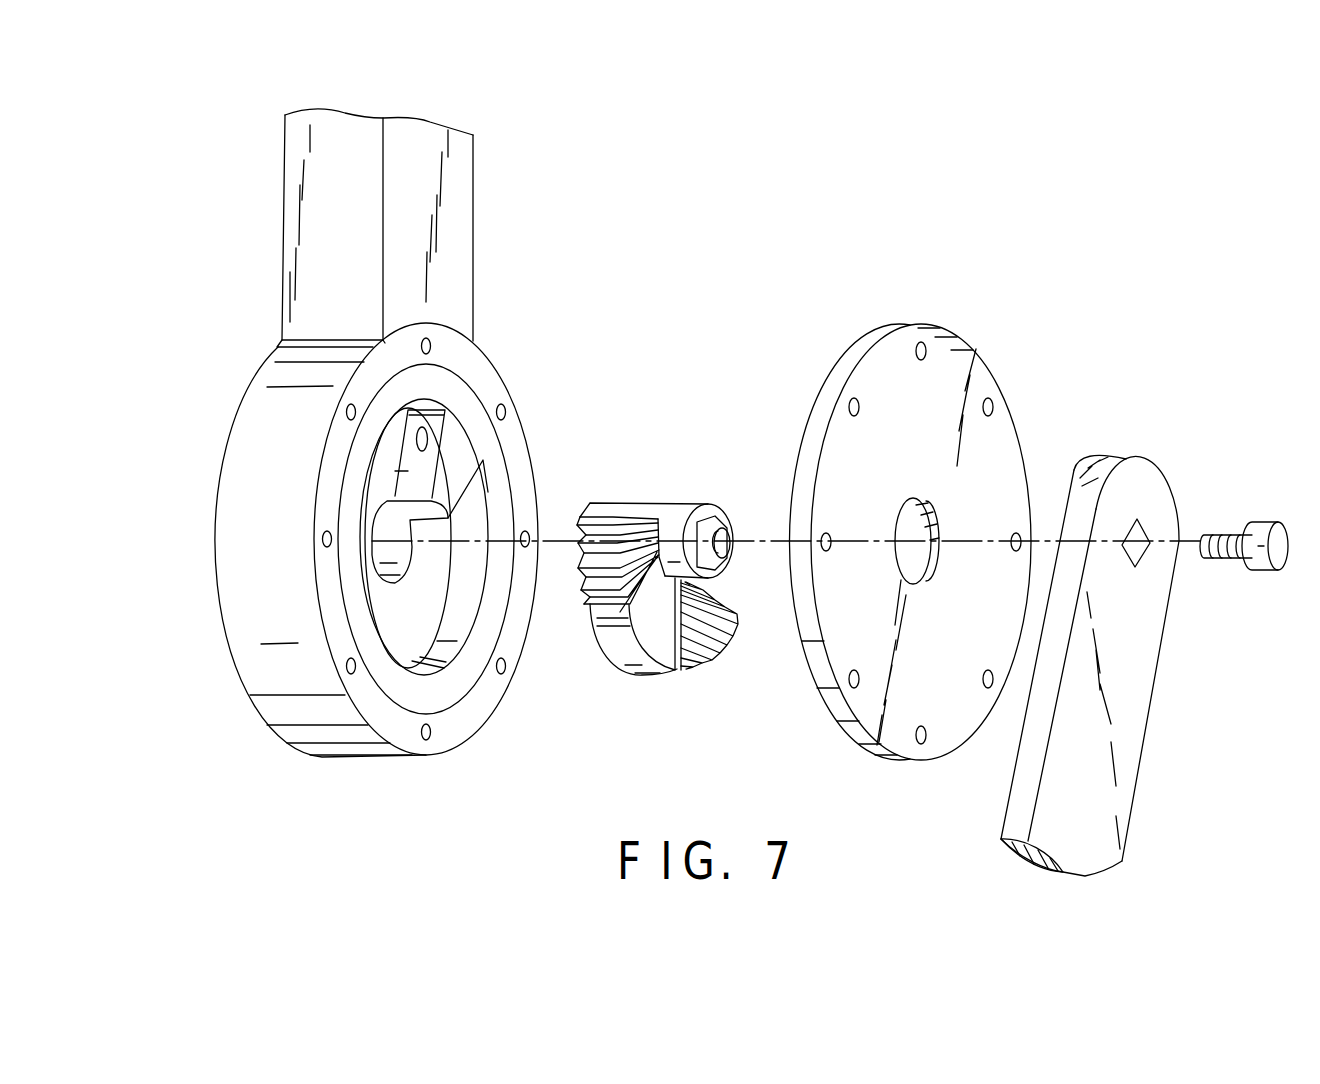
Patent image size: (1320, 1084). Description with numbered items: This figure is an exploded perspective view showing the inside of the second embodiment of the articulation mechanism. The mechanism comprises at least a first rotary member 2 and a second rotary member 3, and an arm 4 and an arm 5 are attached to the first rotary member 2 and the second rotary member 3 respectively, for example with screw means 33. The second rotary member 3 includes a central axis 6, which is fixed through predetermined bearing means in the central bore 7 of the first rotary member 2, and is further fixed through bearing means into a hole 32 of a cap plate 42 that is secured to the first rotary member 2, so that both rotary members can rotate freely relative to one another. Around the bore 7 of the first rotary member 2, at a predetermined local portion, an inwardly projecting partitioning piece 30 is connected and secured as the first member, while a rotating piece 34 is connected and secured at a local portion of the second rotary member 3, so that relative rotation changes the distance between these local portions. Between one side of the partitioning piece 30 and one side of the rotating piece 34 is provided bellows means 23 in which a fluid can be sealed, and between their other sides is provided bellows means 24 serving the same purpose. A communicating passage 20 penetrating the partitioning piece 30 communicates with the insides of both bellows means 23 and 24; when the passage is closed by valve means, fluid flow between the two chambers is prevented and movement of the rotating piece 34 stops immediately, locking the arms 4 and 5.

The first rotary member 2 is at (458, 723).
The second rotary member 3 is at (637, 558).
The arm 4 is at (465, 193).
The arm 5 is at (1140, 458).
The central axis 6 is at (703, 508).
The central bore 7 is at (376, 558).
The communicating passage 20 is at (417, 433).
The bellows means 23 is at (408, 471).
The bellows means 24 is at (592, 600).
The partitioning piece 30 is at (465, 492).
The hole 32 is at (935, 528).
The screw means 33 is at (1274, 523).
The rotating piece 34 is at (672, 663).
The cap plate 42 is at (928, 518).